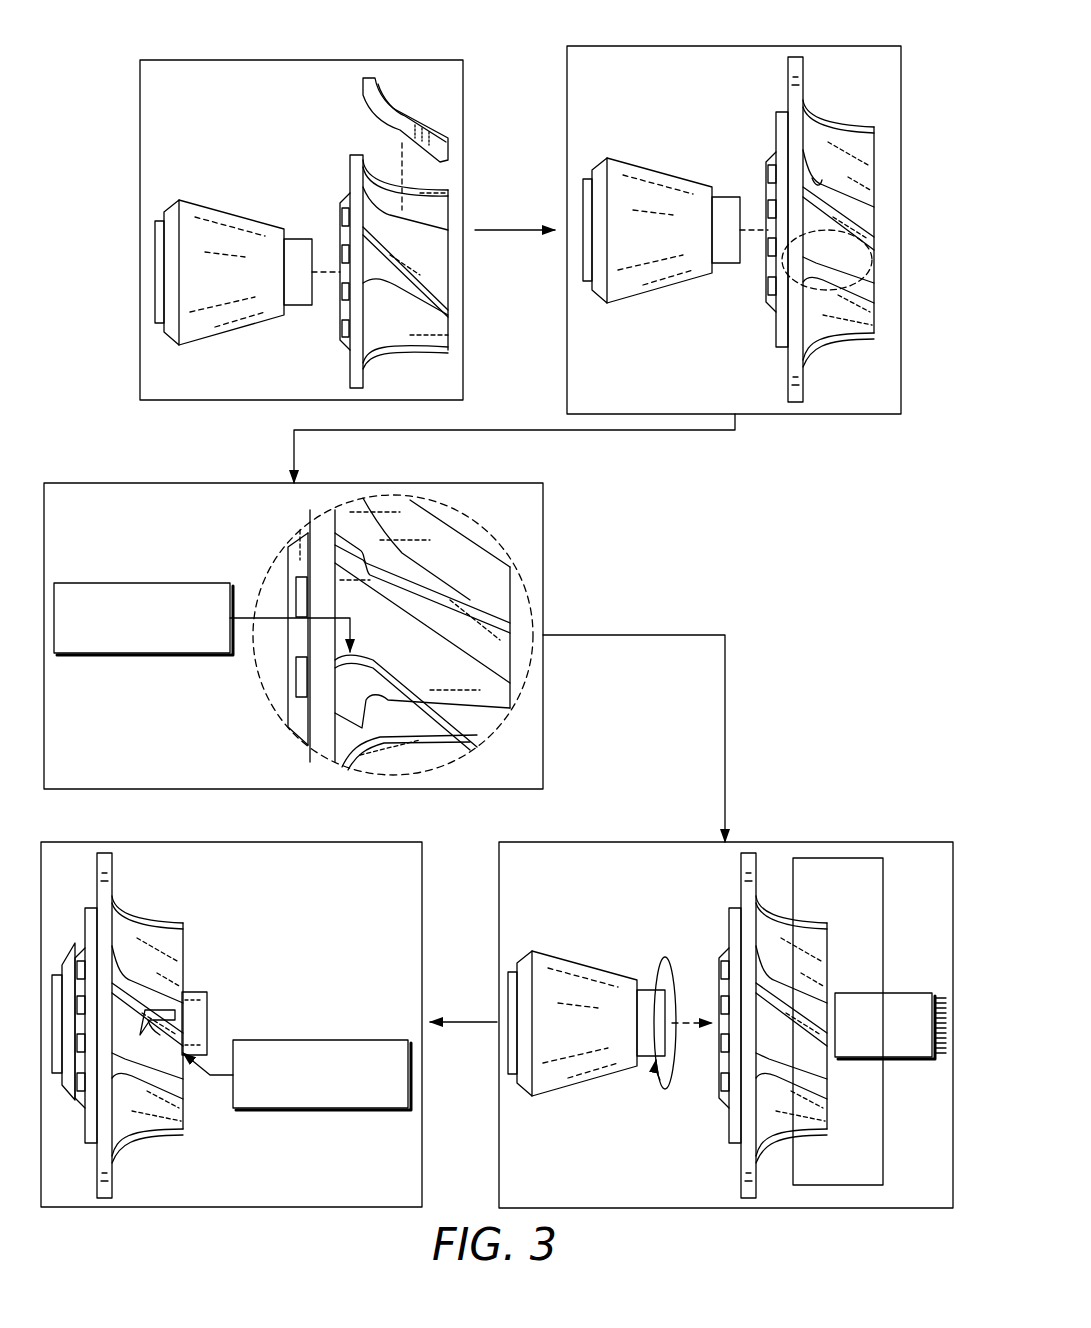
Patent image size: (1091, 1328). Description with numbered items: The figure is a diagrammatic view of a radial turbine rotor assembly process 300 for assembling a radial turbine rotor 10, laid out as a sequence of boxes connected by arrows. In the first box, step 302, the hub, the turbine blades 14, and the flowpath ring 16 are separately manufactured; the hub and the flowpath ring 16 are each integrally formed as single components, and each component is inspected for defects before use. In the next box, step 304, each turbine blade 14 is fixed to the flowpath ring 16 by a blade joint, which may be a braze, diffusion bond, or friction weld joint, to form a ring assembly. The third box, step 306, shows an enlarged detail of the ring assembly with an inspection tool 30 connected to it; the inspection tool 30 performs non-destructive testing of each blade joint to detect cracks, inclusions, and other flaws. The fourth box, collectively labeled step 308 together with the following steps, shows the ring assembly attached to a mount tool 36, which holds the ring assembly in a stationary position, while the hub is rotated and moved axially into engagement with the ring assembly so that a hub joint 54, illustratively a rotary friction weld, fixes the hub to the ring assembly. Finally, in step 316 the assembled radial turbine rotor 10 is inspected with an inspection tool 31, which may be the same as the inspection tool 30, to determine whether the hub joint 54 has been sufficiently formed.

The radial turbine rotor assembly process 300 is at (118, 60).
The step of manufacturing the hub, turbine blades, and flowpath ring 302 is at (207, 58).
The step of coupling the turbine blades with the flowpath ring 304 is at (633, 45).
The step of inspecting the blade joints 306 is at (110, 483).
The step of attaching the ring assembly to the mount tool 308 is at (717, 840).
The step of inspecting the radial turbine rotor 316 is at (108, 842).
The radial turbine rotor 10 is at (197, 947).
The turbine blades 14 is at (410, 113).
The flowpath ring 16 is at (330, 133).
The inspection tool 30 is at (108, 583).
The inspection tool 31 is at (287, 1040).
The mount tool 36 is at (890, 993).
The hub joint 54 is at (173, 1010).